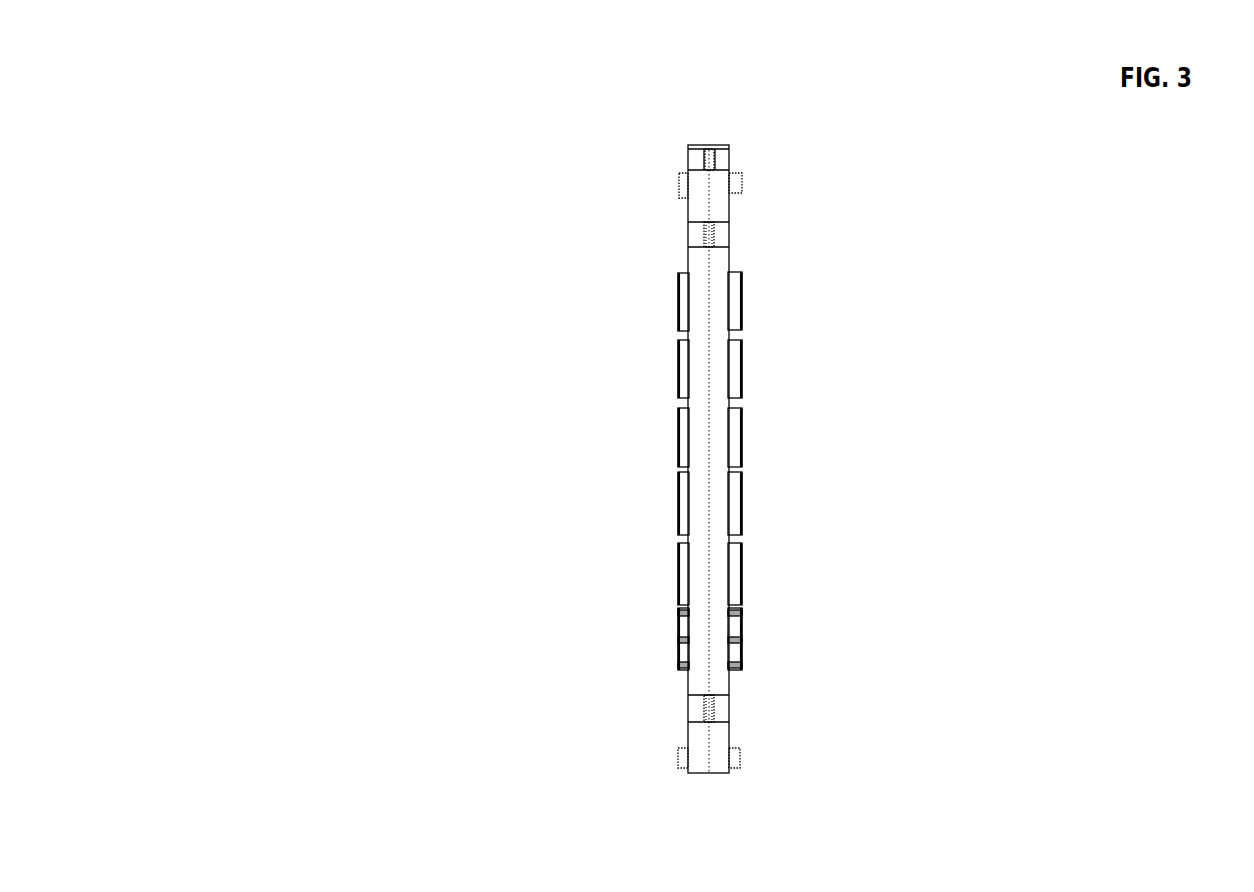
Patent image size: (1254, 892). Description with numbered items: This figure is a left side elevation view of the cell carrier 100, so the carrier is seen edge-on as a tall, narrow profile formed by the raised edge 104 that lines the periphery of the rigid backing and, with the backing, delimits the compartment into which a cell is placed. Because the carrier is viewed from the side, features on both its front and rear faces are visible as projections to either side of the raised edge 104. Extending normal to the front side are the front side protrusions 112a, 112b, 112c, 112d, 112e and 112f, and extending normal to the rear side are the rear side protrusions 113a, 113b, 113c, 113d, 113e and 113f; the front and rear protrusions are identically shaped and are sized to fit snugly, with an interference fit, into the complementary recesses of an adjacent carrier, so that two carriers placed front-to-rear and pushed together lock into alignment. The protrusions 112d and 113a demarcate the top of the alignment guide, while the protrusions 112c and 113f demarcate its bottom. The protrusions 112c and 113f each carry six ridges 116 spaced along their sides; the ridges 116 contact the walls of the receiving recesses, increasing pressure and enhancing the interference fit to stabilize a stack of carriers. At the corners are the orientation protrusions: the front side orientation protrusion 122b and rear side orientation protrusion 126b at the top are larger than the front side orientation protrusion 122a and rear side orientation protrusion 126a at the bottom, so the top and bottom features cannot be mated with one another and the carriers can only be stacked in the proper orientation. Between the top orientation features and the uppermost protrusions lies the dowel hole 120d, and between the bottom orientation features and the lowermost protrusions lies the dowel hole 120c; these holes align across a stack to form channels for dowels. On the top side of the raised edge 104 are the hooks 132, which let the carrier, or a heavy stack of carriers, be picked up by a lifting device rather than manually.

The cell carrier 100 is at (488, 118).
The raised edge 104 is at (818, 262).
The hooks 132 is at (708, 148).
The rear side orientation protrusion 126b is at (684, 172).
The front side orientation protrusion 122b is at (732, 169).
The dowel hole 120d is at (718, 237).
The dowel hole 120c is at (718, 710).
The rear side orientation protrusion 126a is at (683, 760).
The front side orientation protrusion 122a is at (733, 760).
The rear side protrusion 113a is at (683, 301).
The rear side protrusion 113b is at (683, 436).
The rear side protrusion 113c is at (683, 570).
The rear side protrusion 113d is at (550, 369).
The rear side protrusion 113e is at (683, 503).
The rear side protrusion 113f is at (683, 654).
The front side protrusion 112a is at (733, 371).
The front side protrusion 112b is at (733, 503).
The front side protrusion 112c is at (733, 650).
The front side protrusion 112d is at (733, 301).
The front side protrusion 112e is at (733, 436).
The front side protrusion 112f is at (733, 570).
The ridges 116 is at (680, 640).